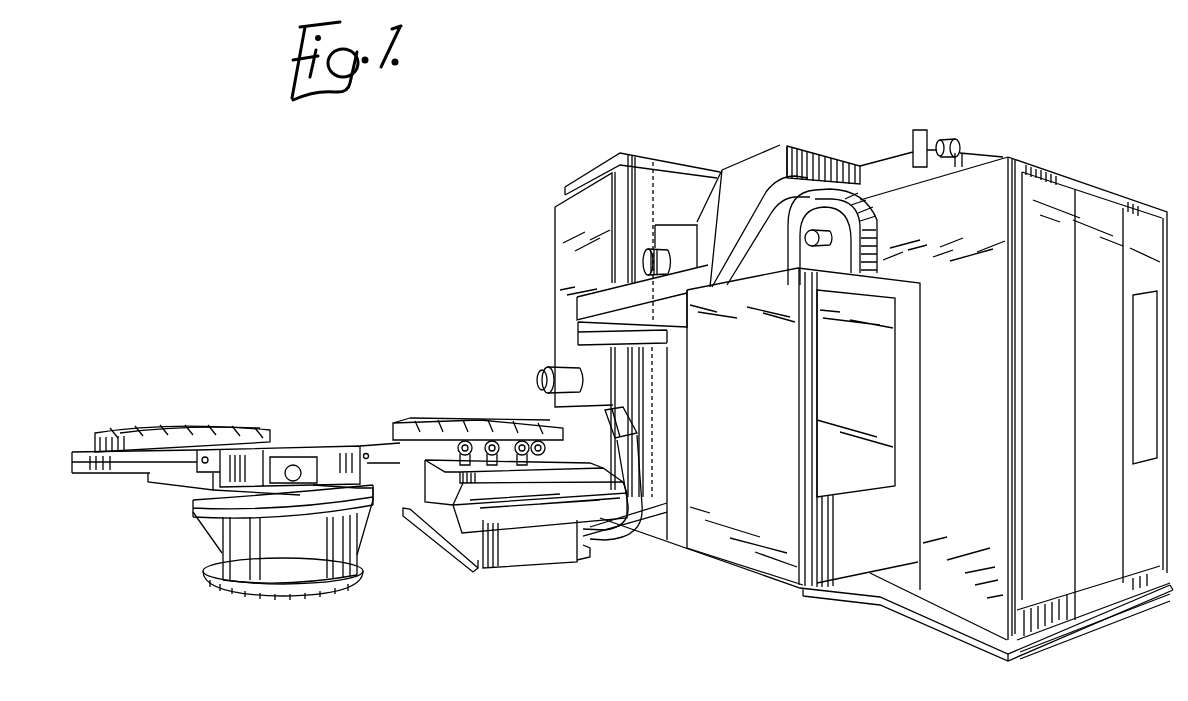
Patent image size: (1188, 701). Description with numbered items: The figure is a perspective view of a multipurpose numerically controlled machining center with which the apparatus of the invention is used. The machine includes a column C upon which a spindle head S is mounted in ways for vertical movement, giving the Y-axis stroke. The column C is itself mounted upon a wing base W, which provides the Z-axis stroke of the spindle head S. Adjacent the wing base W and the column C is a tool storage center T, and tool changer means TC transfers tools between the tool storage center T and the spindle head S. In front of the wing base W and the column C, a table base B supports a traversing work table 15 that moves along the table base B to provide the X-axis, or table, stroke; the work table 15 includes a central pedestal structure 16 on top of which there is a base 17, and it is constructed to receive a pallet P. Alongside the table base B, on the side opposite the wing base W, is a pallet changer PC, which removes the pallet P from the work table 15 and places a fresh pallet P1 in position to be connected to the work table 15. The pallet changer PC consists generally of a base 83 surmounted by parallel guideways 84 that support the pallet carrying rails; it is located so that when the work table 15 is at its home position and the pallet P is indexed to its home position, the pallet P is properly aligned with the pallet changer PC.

The column C is at (543, 188).
The tool changer means TC is at (686, 214).
The tool storage center T is at (894, 232).
The spindle head S is at (525, 358).
The pallet P is at (507, 409).
The base 17 is at (550, 447).
The traversing work table 15 is at (397, 410).
The parallel guideways 84 is at (327, 457).
The fresh pallet P1 is at (173, 418).
The pallet changer PC is at (194, 559).
The base 83 is at (327, 600).
The central pedestal structure 16 is at (433, 480).
The table base B is at (528, 581).
The wing base W is at (648, 556).